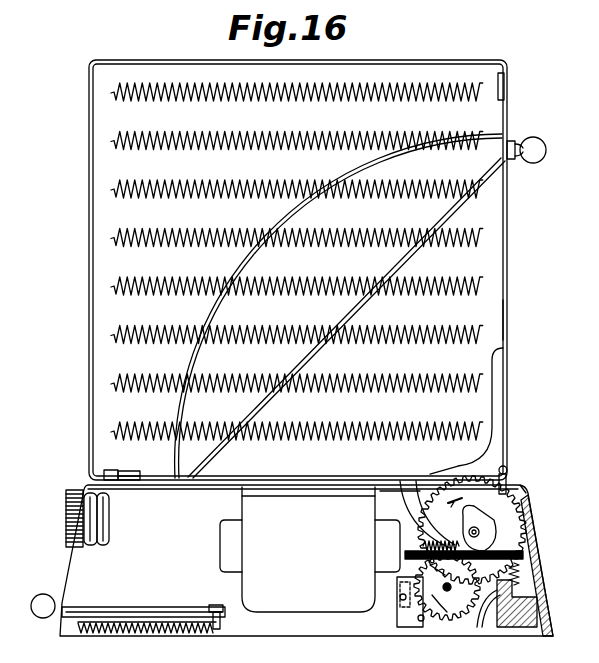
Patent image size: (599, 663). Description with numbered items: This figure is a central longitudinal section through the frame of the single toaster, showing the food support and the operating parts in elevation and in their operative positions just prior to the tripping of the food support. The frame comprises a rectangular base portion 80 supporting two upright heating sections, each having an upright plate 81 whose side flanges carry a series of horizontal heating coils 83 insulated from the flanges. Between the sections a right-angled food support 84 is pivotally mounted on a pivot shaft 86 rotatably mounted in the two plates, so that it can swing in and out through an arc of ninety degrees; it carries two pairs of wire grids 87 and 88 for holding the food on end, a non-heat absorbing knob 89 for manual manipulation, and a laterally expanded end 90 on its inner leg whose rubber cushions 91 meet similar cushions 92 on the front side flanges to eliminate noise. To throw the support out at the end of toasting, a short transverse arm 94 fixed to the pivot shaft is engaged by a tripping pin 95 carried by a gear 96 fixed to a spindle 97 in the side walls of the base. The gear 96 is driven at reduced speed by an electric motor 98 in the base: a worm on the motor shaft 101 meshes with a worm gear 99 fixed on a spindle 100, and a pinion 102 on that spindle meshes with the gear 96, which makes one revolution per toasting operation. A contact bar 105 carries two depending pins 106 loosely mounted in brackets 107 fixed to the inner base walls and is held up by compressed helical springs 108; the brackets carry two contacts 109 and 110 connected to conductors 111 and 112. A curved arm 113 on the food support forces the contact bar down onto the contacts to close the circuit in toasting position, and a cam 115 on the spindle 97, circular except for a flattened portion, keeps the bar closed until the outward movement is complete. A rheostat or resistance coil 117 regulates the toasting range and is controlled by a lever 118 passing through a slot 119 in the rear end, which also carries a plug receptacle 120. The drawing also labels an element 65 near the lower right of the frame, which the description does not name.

The base portion 80 is at (306, 560).
The upright plate 81 is at (89, 264).
The heating coils 83 is at (193, 224).
The food support 84 is at (507, 320).
The pivot shaft 86 is at (507, 468).
The wire grids 87 is at (338, 306).
The wire grids 88 is at (402, 263).
The non-heat absorbing knob 89 is at (538, 138).
The end of inner leg 90 is at (106, 475).
The rubber cushions 91 is at (150, 481).
The cushions 92 is at (504, 78).
The transverse arm 94 is at (518, 490).
The tripping pin 95 is at (524, 503).
The gear 96 is at (520, 523).
The spindle 97 is at (479, 532).
The electric motor 98 is at (310, 549).
The worm gear 99 is at (447, 622).
The spindle 100 is at (447, 587).
The motor shaft 101 is at (420, 546).
The pinion 102 is at (458, 598).
The contact bar 105 is at (405, 596).
The depending pins 106 is at (556, 554).
The brackets 107 is at (528, 574).
The helical springs 108 is at (402, 572).
The contact 109 is at (449, 567).
The contact 110 is at (535, 547).
The conductor 111 is at (410, 636).
The conductor 112 is at (488, 628).
The curved arm 113 is at (400, 499).
The cam 115 is at (478, 525).
The rheostat or resistance coil 117 is at (133, 634).
The lever 118 is at (40, 618).
The slot 119 is at (70, 604).
The plug receptacle 120 is at (110, 518).
The tube 65 is at (487, 452).